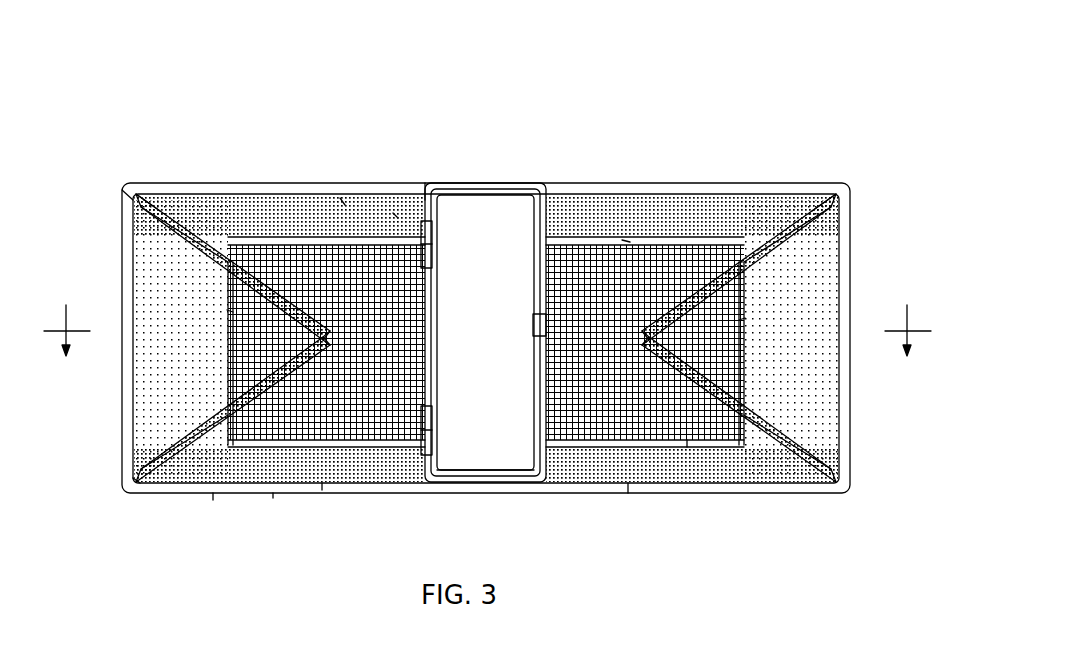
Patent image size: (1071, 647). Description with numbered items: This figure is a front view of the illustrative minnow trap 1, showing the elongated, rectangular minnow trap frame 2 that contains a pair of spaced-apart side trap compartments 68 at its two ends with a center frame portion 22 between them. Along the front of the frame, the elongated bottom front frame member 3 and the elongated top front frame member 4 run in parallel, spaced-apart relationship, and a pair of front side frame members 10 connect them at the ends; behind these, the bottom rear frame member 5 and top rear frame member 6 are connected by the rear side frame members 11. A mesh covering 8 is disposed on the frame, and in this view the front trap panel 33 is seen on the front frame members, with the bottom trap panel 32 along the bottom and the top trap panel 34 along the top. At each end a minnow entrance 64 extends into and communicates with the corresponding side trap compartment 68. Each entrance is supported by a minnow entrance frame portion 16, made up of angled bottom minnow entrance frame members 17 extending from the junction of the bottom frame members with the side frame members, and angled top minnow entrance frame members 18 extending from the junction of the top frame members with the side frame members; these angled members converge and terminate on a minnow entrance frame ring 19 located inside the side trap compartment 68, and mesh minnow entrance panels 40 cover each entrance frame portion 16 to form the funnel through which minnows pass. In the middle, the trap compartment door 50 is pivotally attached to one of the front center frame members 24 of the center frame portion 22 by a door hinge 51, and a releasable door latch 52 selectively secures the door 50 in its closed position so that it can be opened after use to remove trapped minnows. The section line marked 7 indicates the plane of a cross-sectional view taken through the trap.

The minnow trap 1 is at (148, 62).
The minnow trap frame 2 is at (213, 500).
The bottom front frame member 3 is at (322, 490).
The top front frame member 4 is at (340, 198).
The bottom rear frame member 5 is at (687, 440).
The top rear frame member 6 is at (622, 240).
The section line 7- 7 is at (487, 317).
The mesh covering 8 is at (273, 498).
The front side frame members 10 is at (123, 425).
The rear side frame members 11 is at (227, 310).
The minnow entrance frame portion 16 is at (153, 195).
The bottom minnow entrance frame member 17 is at (190, 437).
The top minnow entrance frame member 18 is at (268, 268).
The minnow entrance frame ring 19 is at (325, 338).
The center frame portion 22 is at (522, 183).
The front center frame members 24 is at (547, 453).
The bottom trap panel 32 is at (628, 493).
The front trap panel 33 is at (150, 433).
The top trap panel 34 is at (393, 213).
The mesh minnow entrance panel 40 is at (200, 220).
The trap compartment door 50 is at (482, 213).
The door hinge 51 is at (434, 245).
The door latch 52 is at (533, 332).
The minnow entrance 64 is at (125, 215).
The side trap compartments 68 is at (273, 212).